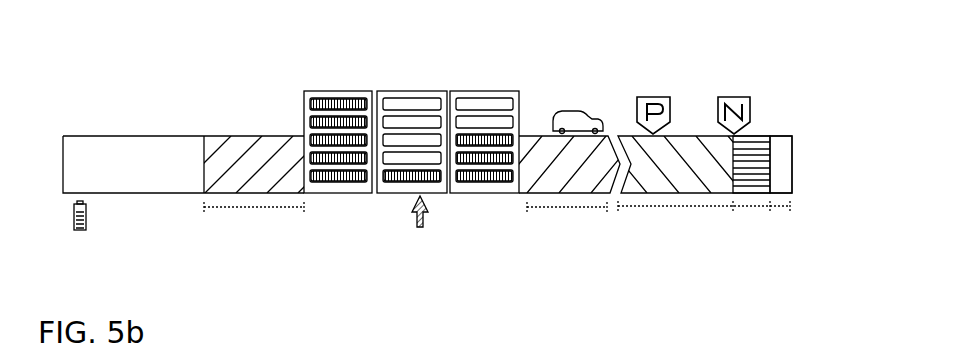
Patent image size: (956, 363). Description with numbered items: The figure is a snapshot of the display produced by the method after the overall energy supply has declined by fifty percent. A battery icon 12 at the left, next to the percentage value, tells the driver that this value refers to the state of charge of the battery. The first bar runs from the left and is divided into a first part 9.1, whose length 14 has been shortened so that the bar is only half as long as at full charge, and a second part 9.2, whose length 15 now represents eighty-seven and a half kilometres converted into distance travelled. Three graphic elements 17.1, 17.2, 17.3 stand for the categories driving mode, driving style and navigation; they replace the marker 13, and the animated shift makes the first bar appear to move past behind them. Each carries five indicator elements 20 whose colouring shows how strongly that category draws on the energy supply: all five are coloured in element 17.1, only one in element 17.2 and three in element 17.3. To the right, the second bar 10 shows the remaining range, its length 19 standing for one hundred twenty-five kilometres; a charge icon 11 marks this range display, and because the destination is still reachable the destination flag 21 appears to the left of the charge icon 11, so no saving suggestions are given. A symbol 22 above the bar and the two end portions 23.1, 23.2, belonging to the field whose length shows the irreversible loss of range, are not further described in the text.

The first part of first bar 9.1 is at (257, 170).
The second part of first bar 9.2 is at (542, 170).
The second bar 10 is at (630, 142).
The charge icon 11 is at (726, 98).
The battery icon 12 is at (86, 226).
The marker 13 is at (418, 229).
The length of first part 14 is at (216, 207).
The length of second part 15 is at (527, 207).
The first graphic element 17.1 is at (372, 92).
The second graphic element 17.2 is at (447, 92).
The third graphic element 17.3 is at (519, 92).
The length of second bar 19 is at (718, 206).
The indicator elements 20 is at (334, 102).
The destination flag 21 is at (651, 98).
The vehicle symbol 22 is at (577, 119).
The reserve range section 23.1 is at (785, 165).
The striped range section 23.2 is at (752, 153).